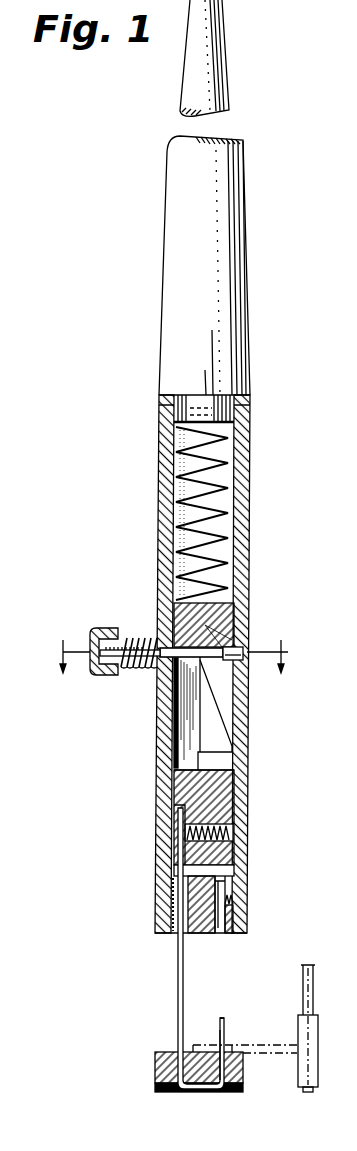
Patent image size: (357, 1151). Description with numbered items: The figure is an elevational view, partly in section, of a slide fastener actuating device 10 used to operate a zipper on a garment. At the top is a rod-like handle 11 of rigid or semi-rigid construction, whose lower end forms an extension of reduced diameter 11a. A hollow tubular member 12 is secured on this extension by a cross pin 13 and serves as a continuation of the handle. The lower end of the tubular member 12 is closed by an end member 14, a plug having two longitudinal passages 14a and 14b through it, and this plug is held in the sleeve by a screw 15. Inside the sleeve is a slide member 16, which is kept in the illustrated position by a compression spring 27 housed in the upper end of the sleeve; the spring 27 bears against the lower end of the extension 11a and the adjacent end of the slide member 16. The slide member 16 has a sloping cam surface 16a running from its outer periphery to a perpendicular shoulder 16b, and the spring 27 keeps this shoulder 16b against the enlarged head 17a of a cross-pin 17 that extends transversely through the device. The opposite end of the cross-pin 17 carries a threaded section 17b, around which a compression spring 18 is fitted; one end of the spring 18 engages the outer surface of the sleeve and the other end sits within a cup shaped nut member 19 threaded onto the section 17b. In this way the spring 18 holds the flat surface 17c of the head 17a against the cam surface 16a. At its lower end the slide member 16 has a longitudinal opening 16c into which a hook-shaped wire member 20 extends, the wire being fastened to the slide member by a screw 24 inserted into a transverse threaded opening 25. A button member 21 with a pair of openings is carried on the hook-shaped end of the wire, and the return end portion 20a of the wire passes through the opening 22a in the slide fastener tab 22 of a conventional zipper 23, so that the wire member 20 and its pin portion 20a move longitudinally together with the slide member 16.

The slide fastener actuating device 10 is at (120, 359).
The handle 11 is at (161, 239).
The extension of reduced diameter 11a is at (250, 420).
The tubular member 12 is at (160, 449).
The cross pin 13 is at (173, 405).
The end member 14 is at (200, 928).
The longitudinal passage 14a is at (172, 906).
The longitudinal passage 14b is at (218, 920).
The screw 15 is at (233, 901).
The slide member 16 is at (186, 723).
The cam surface 16a is at (220, 712).
The shoulder 16b is at (238, 640).
The longitudinal opening 16c is at (173, 820).
The cross-pin 17 is at (173, 680).
The enlarged head 17a is at (247, 640).
The threaded section 17b is at (127, 636).
The flat surface 17c is at (187, 625).
The compression spring 18 is at (130, 664).
The cup shaped nut member 19 is at (99, 627).
The wire member 20 is at (178, 970).
The return end portion 20a is at (223, 1019).
The button member 21 is at (155, 1061).
The slide fastener tab 22 is at (287, 1053).
The opening 22a is at (228, 1047).
The zipper 23 is at (306, 1089).
The screw 24 is at (237, 797).
The transverse threaded opening 25 is at (205, 823).
The compression spring 27 is at (180, 497).